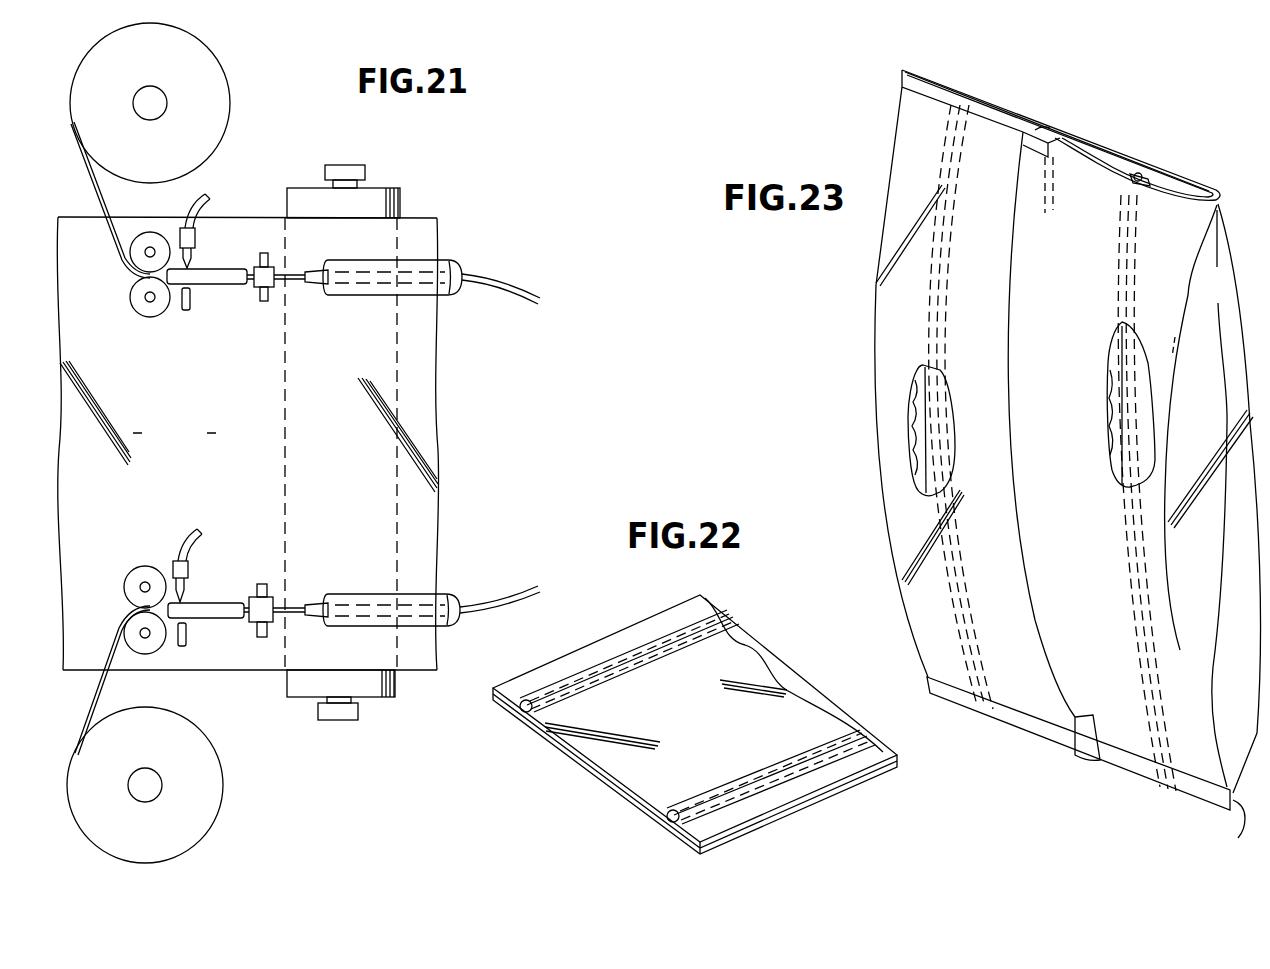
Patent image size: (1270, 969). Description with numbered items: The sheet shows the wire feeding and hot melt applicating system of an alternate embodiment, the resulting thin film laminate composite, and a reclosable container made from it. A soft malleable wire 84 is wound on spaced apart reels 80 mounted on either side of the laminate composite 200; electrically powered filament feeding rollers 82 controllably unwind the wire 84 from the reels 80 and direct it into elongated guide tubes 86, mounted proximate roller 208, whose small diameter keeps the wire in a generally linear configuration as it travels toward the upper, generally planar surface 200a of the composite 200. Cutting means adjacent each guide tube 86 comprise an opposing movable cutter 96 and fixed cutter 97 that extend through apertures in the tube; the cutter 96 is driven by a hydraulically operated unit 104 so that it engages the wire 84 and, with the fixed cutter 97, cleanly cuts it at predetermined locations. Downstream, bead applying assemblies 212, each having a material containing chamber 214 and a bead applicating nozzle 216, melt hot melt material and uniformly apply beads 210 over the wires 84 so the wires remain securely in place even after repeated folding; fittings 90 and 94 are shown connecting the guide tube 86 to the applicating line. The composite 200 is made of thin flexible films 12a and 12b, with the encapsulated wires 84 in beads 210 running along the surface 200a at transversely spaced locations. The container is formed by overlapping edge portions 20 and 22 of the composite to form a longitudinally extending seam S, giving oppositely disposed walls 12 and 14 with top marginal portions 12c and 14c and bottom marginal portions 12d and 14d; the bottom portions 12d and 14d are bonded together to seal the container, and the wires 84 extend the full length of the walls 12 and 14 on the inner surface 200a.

In FIG. 21, the reel 80 is at (202, 82).
In FIG. 21, the soft malleable wire 84 is at (90, 182).
In FIG. 22, the soft malleable wire 84 is at (690, 637).
In FIG. 23, the soft malleable wire 84 is at (1148, 178).
In FIG. 21, the filament feeding rollers 82 is at (132, 276).
In FIG. 21, the guide tube 86 is at (212, 269).
In FIG. 21, the hydraulically operated unit 104 is at (178, 236).
In FIG. 21, the cutter 96 is at (195, 232).
In FIG. 21, the fixed cutter 97 is at (184, 312).
In FIG. 21, the coupling block 90 is at (254, 285).
In FIG. 21, the fittings 94 is at (264, 253).
In FIG. 21, the roller 208 is at (385, 188).
In FIG. 21, the bead applying assembly 212 is at (422, 266).
In FIG. 21, the material containing chamber 214 is at (440, 297).
In FIG. 21, the bead applicating nozzle 216 is at (318, 268).
In FIG. 21, the thin flexible film 12b is at (420, 456).
In FIG. 22, the thin flexible film 12b is at (573, 747).
In FIG. 22, the thin flexible film 12a is at (587, 768).
In FIG. 21, the upper planar surface 200a is at (174, 434).
In FIG. 22, the upper planar surface 200a is at (766, 668).
In FIG. 23, the upper planar surface 200a is at (915, 403).
In FIG. 22, the laminate composite 200 is at (695, 711).
In FIG. 22, the bead 210 is at (600, 690).
In FIG. 23, the bead 210 is at (1139, 172).
In FIG. 23, the wall 12 is at (1038, 435).
In FIG. 23, the top marginal portion 12c is at (895, 87).
In FIG. 23, the bottom marginal portion 12d is at (1145, 772).
In FIG. 23, the wall 14 is at (1214, 196).
In FIG. 23, the top marginal portion 14c is at (940, 84).
In FIG. 23, the bottom marginal portion 14d is at (1232, 830).
In FIG. 23, the edge portion 20 is at (1040, 128).
In FIG. 23, the edge portion 22 is at (1032, 143).
In FIG. 23, the seam S is at (1008, 243).